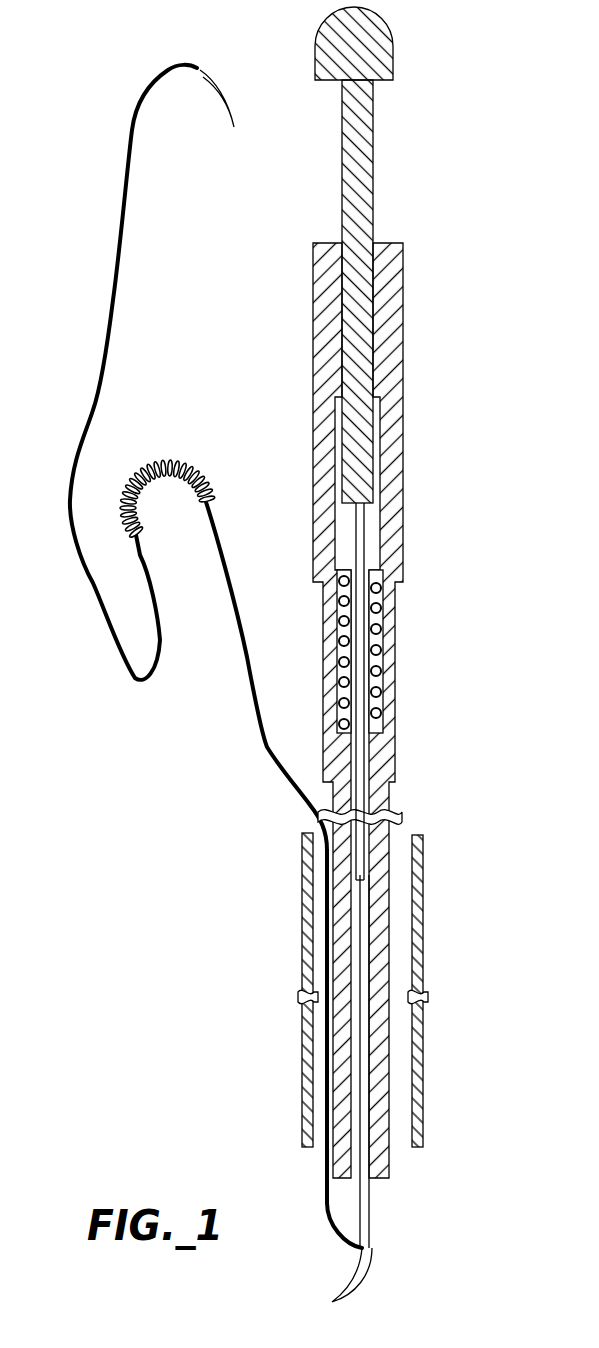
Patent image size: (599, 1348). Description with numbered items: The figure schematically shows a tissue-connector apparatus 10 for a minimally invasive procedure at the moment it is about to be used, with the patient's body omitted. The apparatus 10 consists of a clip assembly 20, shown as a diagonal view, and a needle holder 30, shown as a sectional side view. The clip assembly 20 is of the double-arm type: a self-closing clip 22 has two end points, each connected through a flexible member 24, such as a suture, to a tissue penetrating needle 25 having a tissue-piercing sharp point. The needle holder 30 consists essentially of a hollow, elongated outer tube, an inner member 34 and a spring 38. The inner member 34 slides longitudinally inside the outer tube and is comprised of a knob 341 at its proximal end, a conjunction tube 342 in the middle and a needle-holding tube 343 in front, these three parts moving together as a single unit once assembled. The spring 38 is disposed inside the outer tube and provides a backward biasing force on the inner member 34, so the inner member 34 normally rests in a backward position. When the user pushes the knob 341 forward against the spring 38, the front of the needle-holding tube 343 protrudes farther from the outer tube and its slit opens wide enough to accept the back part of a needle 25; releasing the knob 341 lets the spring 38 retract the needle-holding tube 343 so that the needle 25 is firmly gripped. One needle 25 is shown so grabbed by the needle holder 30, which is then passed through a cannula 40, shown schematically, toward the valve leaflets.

The tissue-connector apparatus 10 is at (174, 836).
The clip assembly 20 is at (90, 672).
The clip 22 is at (163, 460).
The flexible member 24 is at (123, 203).
The tissue penetrating needle 25 is at (236, 92).
The needle holder 30 is at (262, 814).
The inner member 34 is at (315, 252).
The knob 341 is at (322, 22).
The conjunction tube 342 is at (365, 748).
The needle-holding tube 343 is at (372, 1222).
The spring 38 is at (378, 618).
The cannula 40 is at (424, 926).